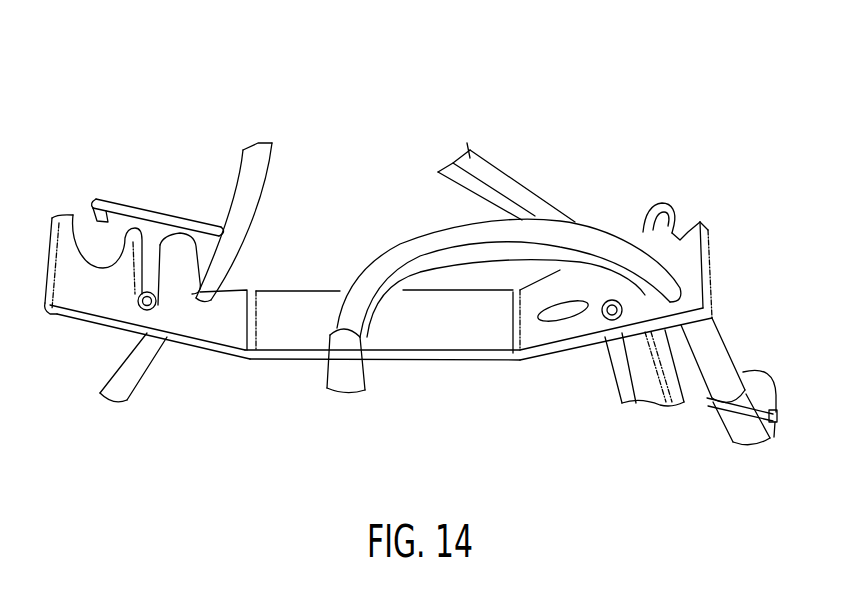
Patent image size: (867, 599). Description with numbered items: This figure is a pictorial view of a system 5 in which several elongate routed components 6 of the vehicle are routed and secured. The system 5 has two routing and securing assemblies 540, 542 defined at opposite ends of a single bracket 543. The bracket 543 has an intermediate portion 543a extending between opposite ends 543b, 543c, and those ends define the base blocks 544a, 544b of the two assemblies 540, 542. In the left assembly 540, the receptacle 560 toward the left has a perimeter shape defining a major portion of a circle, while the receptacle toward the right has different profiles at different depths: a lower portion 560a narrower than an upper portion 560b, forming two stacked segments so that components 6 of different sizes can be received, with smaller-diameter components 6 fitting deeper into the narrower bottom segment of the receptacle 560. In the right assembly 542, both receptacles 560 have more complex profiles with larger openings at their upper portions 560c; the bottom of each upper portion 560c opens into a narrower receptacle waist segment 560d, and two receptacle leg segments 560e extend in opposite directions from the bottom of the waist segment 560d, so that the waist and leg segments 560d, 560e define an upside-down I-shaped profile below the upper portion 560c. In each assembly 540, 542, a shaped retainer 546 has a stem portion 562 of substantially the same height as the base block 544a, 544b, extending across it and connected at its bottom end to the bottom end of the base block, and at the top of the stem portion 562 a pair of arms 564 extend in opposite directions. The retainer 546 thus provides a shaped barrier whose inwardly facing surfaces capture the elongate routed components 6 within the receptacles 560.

The system 5 is at (448, 47).
The elongate routed component 6 is at (277, 183).
The routing and securing assembly 540 is at (133, 133).
The routing and securing assembly 542 is at (617, 122).
The bracket 543 is at (470, 385).
The intermediate portion 543a is at (403, 367).
The end of bracket 543b is at (197, 357).
The end of bracket 543c is at (557, 373).
The base block 544a is at (83, 325).
The base block 544b is at (594, 345).
The retainer 546 is at (170, 208).
The receptacle 560 is at (98, 247).
The lower portion of receptacle 560a is at (218, 293).
The upper portion of receptacle 560b is at (193, 262).
The upper portion of receptacle 560c is at (675, 245).
The receptacle waist segment 560d is at (578, 308).
The receptacle leg segment 560e is at (538, 316).
The stem portion 562 is at (145, 280).
The arm 564 is at (118, 207).